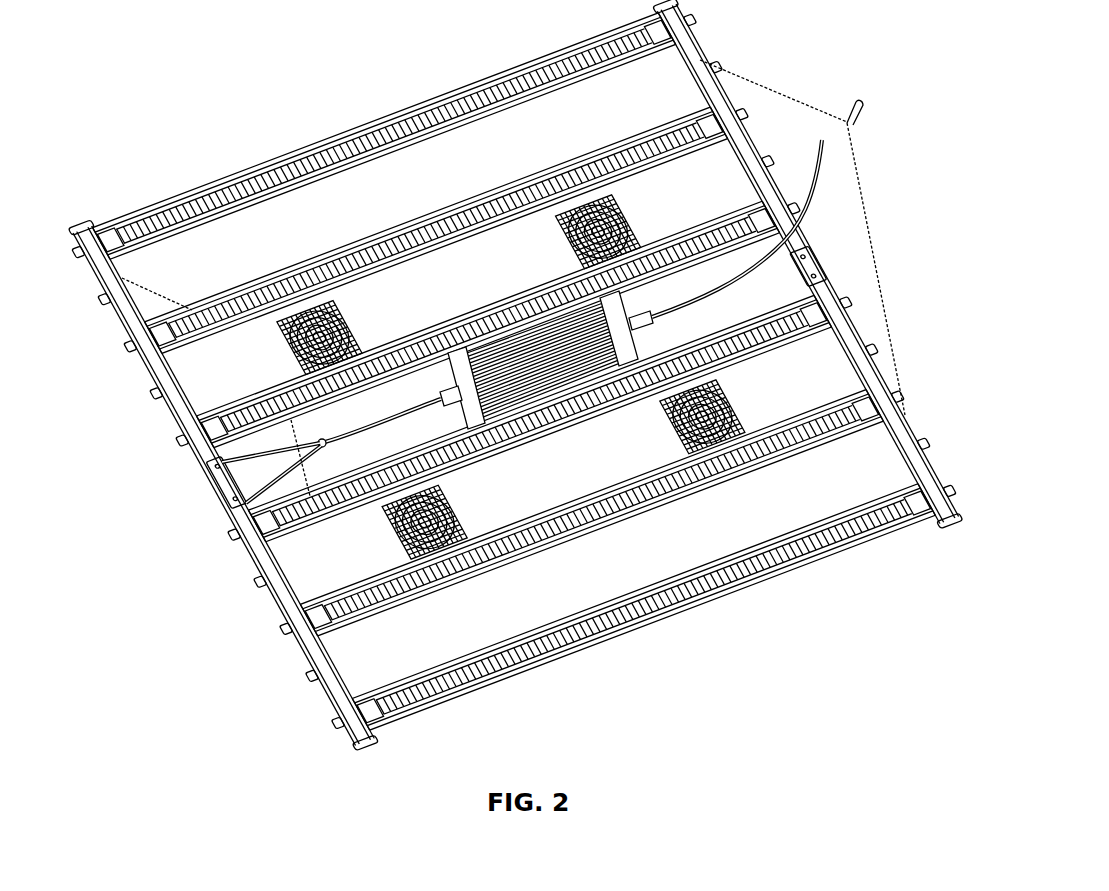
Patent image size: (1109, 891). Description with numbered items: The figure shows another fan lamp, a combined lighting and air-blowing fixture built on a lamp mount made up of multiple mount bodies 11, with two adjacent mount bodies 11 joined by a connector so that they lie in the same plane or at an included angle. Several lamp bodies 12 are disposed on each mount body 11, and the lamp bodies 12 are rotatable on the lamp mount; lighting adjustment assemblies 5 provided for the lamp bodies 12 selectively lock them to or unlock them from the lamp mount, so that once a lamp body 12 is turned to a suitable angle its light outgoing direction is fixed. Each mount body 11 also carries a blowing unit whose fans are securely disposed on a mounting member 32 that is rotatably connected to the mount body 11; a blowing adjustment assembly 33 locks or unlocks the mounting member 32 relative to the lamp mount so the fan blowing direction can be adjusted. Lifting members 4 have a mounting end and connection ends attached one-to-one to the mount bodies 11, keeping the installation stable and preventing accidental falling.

The mount body 11 is at (220, 486).
The lamp body 12 is at (514, 371).
The mounting member 32 is at (547, 493).
The blowing adjustment assembly 33 is at (806, 231).
The lifting member 4 is at (878, 214).
The lighting adjustment assembly 5 is at (949, 491).